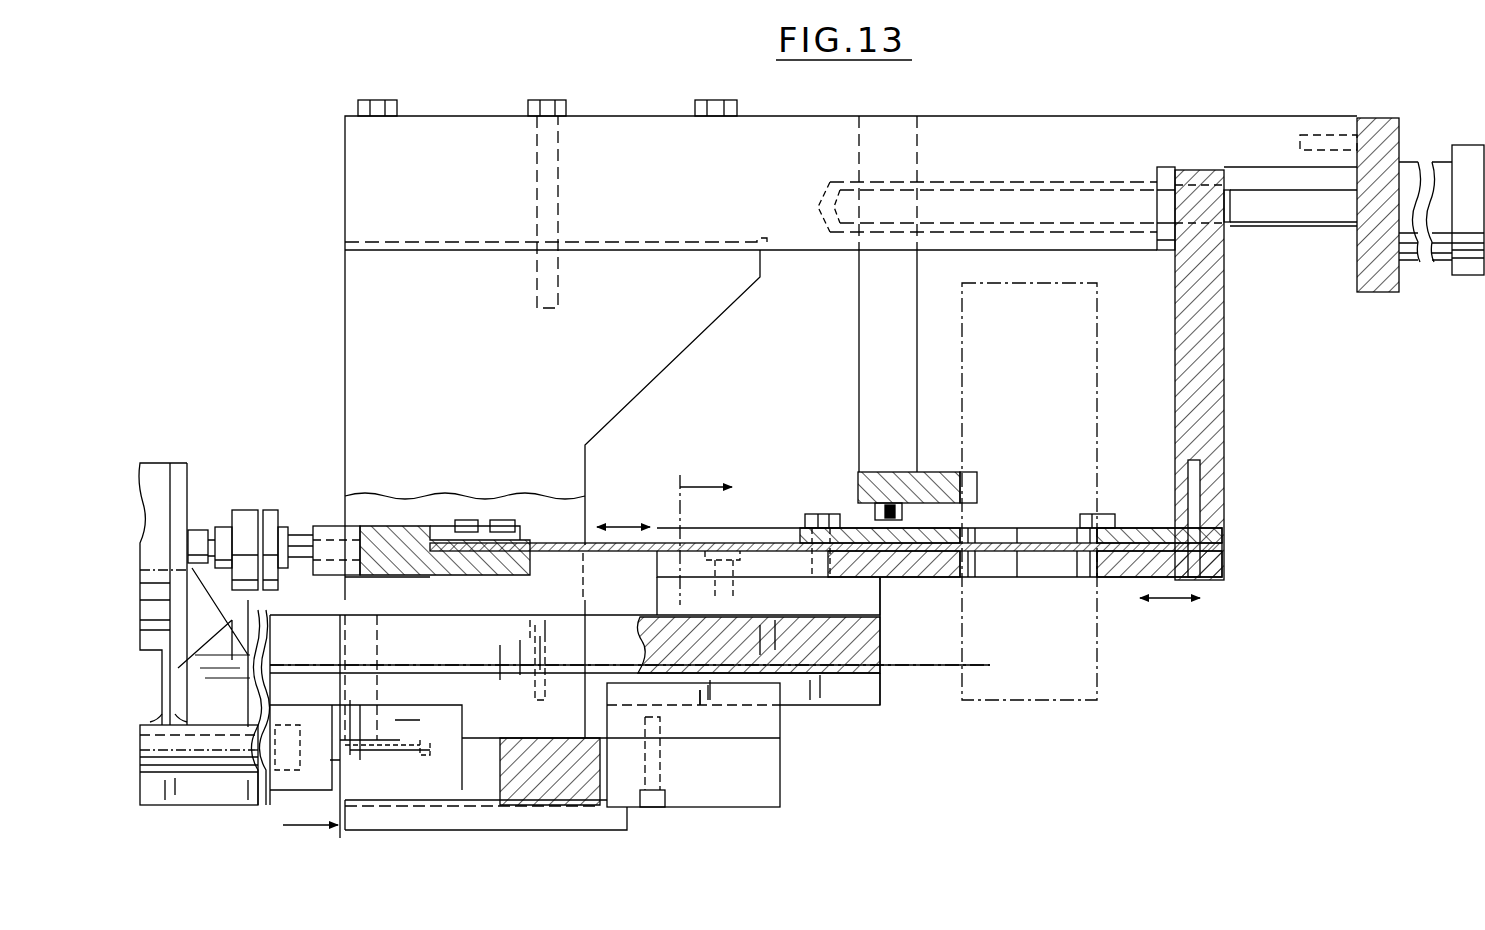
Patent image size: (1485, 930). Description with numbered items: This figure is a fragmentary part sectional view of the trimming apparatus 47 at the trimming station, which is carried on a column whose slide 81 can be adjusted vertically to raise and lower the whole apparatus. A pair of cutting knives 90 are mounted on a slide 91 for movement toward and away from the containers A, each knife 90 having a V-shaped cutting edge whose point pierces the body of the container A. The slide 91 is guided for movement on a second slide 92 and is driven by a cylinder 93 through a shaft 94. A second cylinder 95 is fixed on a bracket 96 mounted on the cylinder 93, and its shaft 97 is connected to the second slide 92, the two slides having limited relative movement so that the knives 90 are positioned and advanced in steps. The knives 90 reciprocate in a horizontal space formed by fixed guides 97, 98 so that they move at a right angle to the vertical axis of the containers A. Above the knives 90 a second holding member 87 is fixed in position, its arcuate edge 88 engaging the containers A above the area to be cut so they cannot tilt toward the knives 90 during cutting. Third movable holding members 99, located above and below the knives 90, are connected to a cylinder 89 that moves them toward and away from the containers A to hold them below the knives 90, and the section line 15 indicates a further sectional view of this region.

The trimming apparatus 47 is at (1262, 412).
The cylinder 89 is at (1466, 145).
The cylinder 93 is at (165, 463).
The shaft 94 is at (310, 530).
The second cylinder 95 is at (225, 760).
The bracket 96 is at (215, 623).
The cutting knives 90 is at (608, 552).
The third movable holding members 99 is at (1137, 528).
The fixed guide 98 is at (924, 577).
The shaft / fixed guide 97 is at (820, 514).
The second holding member 87 is at (858, 488).
The arcuate edge 88 is at (977, 490).
The slide 91 is at (875, 658).
The second slide 92 is at (765, 782).
The slide 81 is at (640, 830).
The section line 15 is at (487, 647).
The bottles / containers A is at (1100, 640).